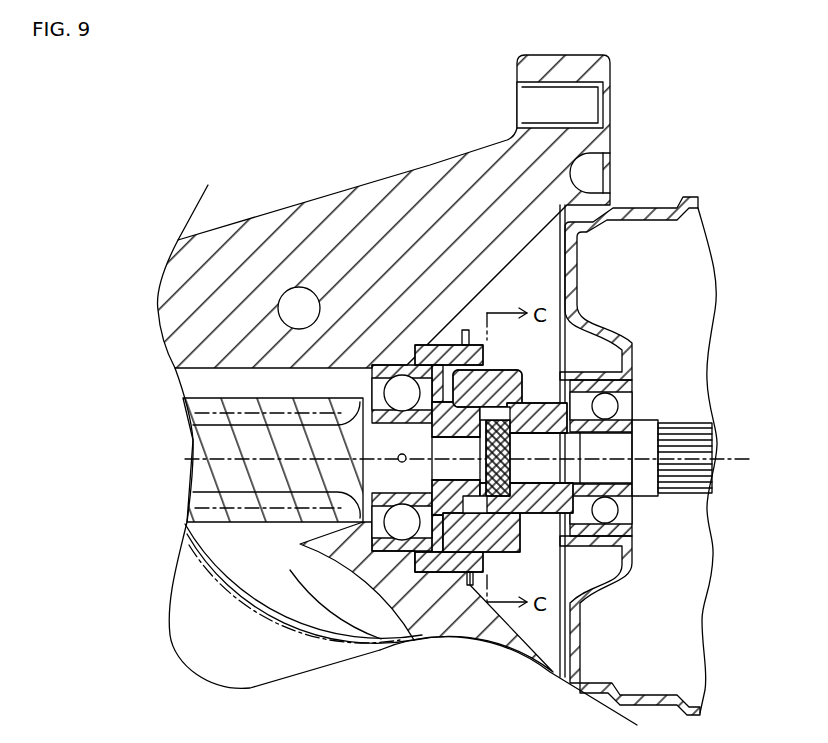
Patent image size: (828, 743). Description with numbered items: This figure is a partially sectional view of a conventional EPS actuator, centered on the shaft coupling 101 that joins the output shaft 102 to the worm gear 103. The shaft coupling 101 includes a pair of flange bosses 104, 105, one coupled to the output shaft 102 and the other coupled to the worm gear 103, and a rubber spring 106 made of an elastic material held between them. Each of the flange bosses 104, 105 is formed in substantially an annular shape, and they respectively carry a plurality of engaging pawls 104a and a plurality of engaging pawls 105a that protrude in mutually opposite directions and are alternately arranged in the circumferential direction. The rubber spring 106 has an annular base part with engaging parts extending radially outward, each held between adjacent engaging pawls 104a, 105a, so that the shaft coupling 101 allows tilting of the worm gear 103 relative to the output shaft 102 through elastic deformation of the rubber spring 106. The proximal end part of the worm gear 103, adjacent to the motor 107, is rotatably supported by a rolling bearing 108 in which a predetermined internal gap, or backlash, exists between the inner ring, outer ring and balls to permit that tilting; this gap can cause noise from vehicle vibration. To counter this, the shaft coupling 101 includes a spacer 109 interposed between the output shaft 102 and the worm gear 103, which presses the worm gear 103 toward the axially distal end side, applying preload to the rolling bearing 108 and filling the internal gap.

The shaft coupling 101 is at (557, 367).
The output shaft 102 is at (650, 424).
The worm gear 103 is at (247, 482).
The flange boss 104 is at (560, 540).
The engaging pawls 104a is at (507, 527).
The flange boss 105 is at (443, 515).
The engaging pawls 105a is at (457, 532).
The rubber spring 106 is at (512, 481).
The motor 107 is at (643, 226).
The rolling bearing 108 is at (362, 566).
The spacer 109 is at (525, 388).